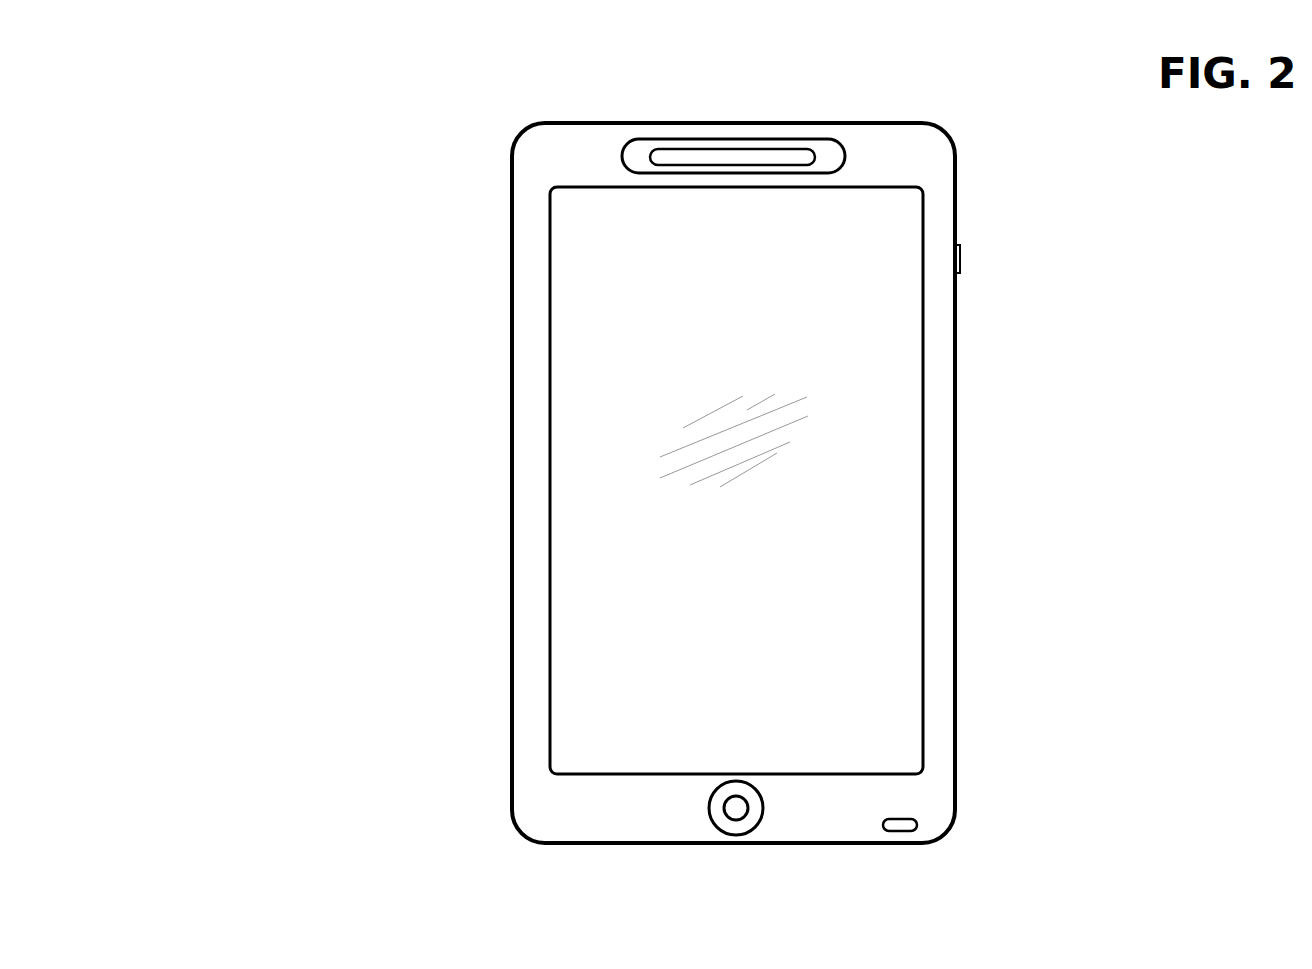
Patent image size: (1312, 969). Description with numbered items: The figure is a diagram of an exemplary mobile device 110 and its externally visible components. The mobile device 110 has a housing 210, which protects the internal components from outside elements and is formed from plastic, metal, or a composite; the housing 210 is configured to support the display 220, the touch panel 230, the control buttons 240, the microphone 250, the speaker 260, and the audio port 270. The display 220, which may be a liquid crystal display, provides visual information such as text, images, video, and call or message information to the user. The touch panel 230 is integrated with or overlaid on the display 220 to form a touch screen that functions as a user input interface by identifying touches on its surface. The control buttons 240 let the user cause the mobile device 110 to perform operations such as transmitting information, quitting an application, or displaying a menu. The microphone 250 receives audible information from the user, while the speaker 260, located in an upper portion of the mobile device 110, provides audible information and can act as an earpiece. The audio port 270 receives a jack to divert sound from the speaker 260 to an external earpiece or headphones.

The mobile device 110 is at (189, 58).
The housing 210 is at (512, 253).
The display 220 is at (556, 309).
The touch panel 230 is at (568, 366).
The control buttons 240 is at (717, 817).
The microphone 250 is at (917, 825).
The speaker 260 is at (632, 152).
The audio port 270 is at (960, 253).